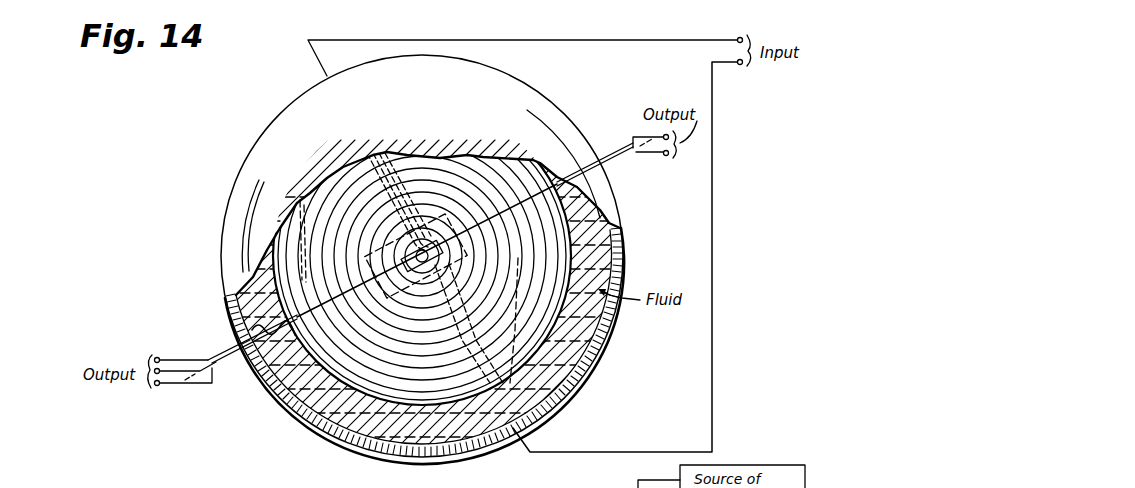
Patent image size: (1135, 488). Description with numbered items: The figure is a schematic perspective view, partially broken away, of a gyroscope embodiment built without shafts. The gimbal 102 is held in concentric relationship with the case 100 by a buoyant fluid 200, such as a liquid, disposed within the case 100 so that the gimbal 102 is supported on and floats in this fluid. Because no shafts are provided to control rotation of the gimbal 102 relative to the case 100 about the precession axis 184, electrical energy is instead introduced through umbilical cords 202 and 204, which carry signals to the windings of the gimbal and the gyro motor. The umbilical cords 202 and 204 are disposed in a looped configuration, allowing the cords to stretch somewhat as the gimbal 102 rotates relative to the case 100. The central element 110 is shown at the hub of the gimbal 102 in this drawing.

The case 100 is at (348, 450).
The gimbal 102 is at (460, 407).
The hub / shaft 110 is at (428, 263).
The precession axis 184 is at (372, 300).
The buoyant fluid 200 is at (587, 309).
The umbilical cord 202 is at (624, 167).
The umbilical cord 204 is at (235, 367).